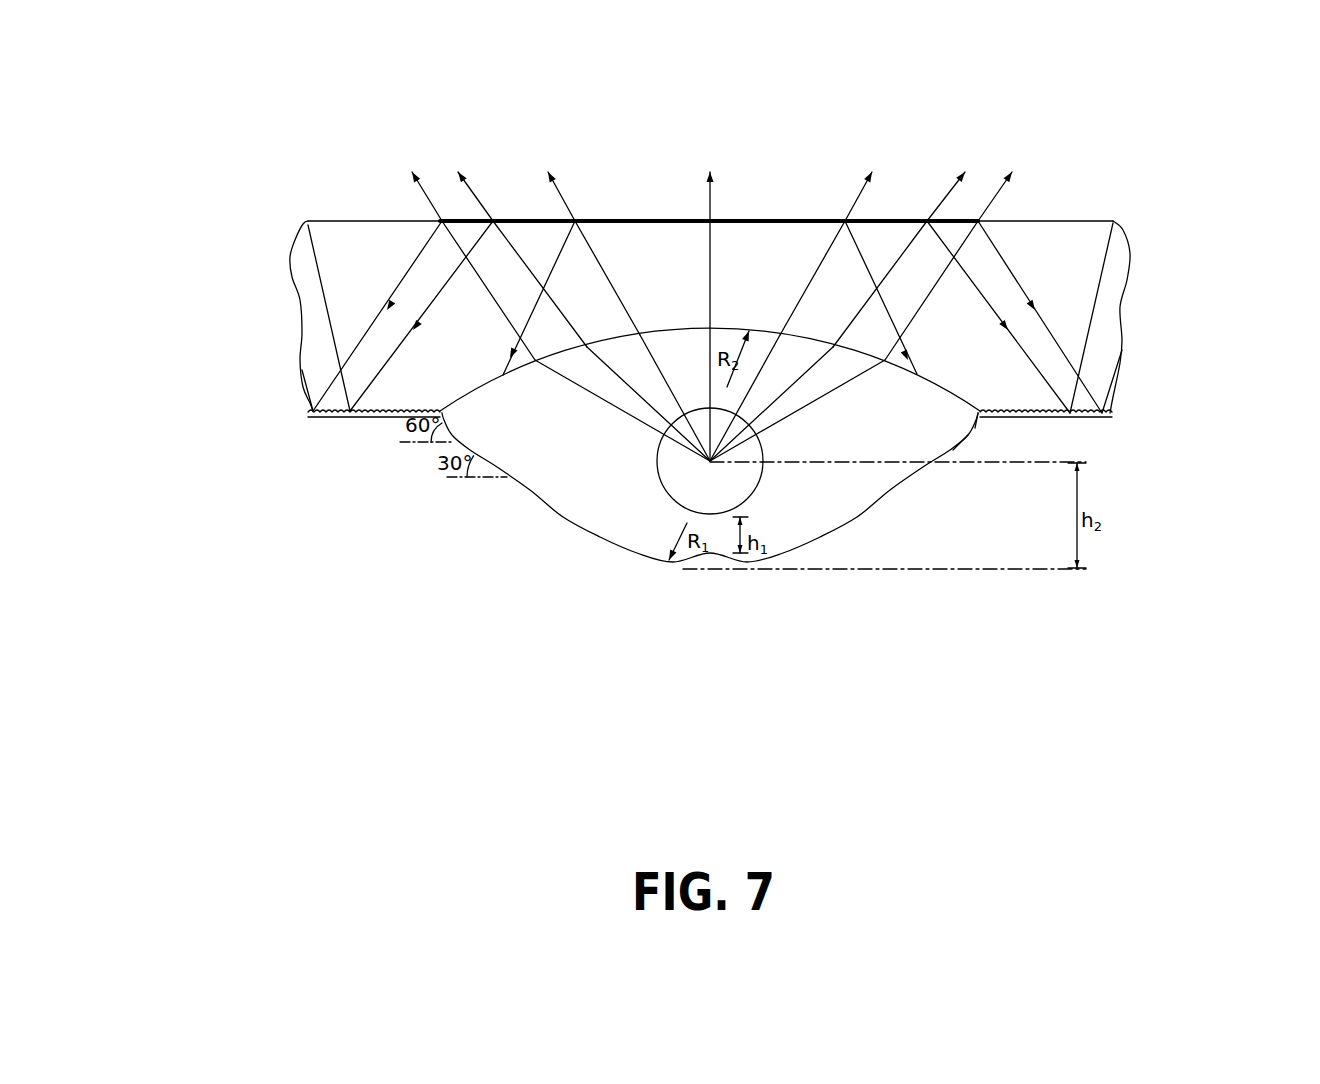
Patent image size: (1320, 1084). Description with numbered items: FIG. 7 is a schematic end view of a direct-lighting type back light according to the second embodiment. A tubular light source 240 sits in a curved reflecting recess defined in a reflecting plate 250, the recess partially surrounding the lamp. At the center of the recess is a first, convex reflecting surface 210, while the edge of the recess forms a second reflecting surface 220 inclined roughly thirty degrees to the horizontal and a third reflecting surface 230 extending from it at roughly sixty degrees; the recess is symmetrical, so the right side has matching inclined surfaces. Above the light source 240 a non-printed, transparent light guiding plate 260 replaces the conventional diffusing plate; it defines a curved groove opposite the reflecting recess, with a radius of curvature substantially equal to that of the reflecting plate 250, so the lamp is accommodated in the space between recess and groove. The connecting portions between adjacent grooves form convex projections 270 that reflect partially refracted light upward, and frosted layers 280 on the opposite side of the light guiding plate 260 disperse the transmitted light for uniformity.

The first reflecting surface 210 is at (702, 560).
The second reflecting surface 220 is at (953, 450).
The third reflecting surface 230 is at (975, 428).
The light source 240 is at (667, 477).
The reflecting plate 250 is at (545, 516).
The non-printed light guiding plate 260 is at (292, 297).
The convex projections 270 is at (310, 408).
The frosted layers 280 is at (903, 217).